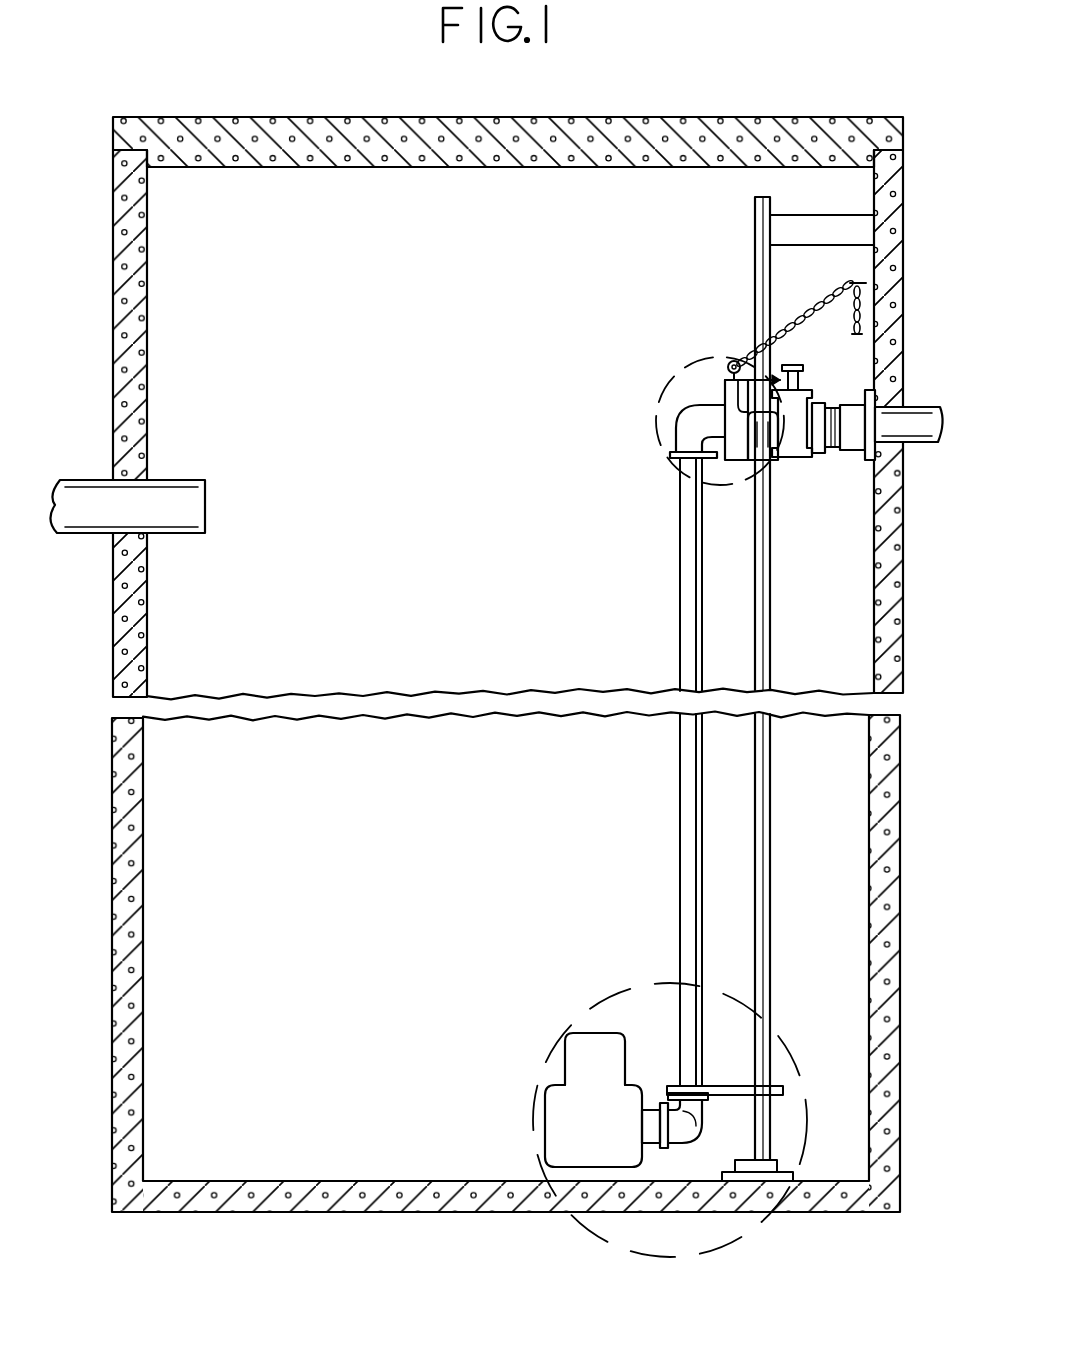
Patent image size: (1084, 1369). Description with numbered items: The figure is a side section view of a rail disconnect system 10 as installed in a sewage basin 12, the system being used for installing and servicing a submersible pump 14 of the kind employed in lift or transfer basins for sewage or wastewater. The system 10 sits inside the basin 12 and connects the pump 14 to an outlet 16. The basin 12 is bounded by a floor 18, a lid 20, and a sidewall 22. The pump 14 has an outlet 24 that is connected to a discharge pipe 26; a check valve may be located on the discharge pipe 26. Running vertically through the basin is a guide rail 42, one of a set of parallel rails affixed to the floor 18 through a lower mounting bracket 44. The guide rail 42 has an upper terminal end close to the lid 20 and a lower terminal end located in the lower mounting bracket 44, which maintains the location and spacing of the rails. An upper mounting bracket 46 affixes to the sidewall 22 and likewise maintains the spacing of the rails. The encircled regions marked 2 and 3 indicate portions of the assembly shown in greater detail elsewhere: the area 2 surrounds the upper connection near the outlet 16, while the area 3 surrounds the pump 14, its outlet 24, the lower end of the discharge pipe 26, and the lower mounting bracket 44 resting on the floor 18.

The upper detail area (elbow and valve assembly) 2 is at (731, 382).
The lower detail area (pump assembly) 3 is at (670, 1111).
The rail disconnect system 10 is at (734, 349).
The basin 12 is at (535, 664).
The pump 14 is at (605, 1141).
The outlet 16 is at (916, 420).
The floor 18 is at (283, 1191).
The lid 20 is at (495, 168).
The sidewall 22 is at (140, 838).
The outlet 24 is at (653, 1110).
The discharge pipe 26 is at (683, 573).
The guide rail 42 is at (787, 689).
The lower mounting bracket 44 is at (790, 1172).
The upper mounting bracket 46 is at (808, 228).